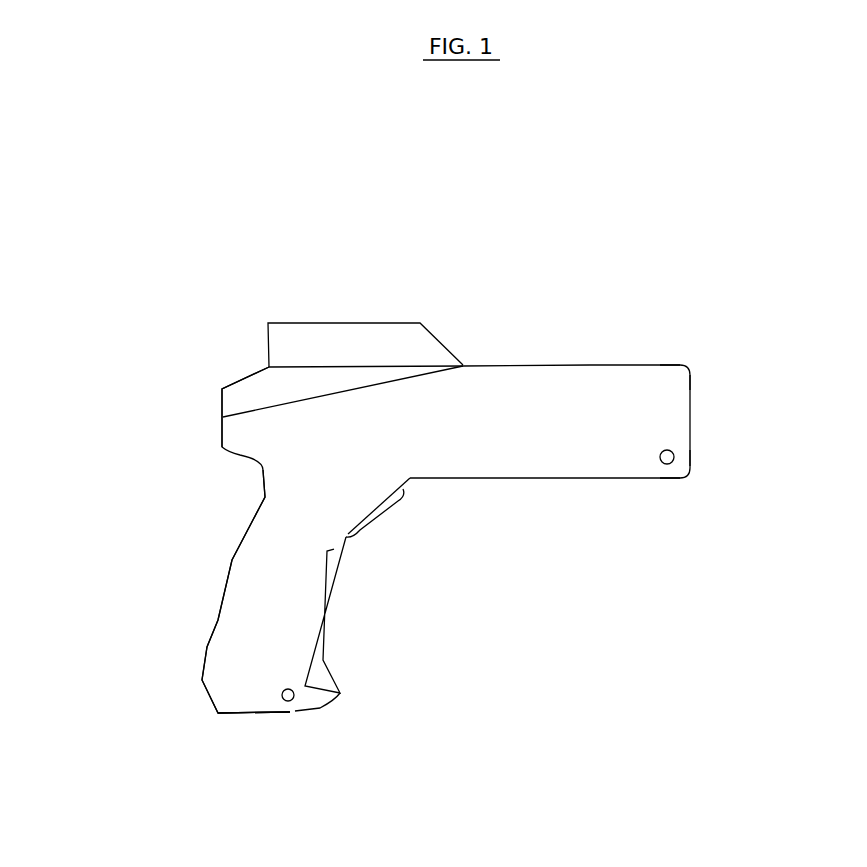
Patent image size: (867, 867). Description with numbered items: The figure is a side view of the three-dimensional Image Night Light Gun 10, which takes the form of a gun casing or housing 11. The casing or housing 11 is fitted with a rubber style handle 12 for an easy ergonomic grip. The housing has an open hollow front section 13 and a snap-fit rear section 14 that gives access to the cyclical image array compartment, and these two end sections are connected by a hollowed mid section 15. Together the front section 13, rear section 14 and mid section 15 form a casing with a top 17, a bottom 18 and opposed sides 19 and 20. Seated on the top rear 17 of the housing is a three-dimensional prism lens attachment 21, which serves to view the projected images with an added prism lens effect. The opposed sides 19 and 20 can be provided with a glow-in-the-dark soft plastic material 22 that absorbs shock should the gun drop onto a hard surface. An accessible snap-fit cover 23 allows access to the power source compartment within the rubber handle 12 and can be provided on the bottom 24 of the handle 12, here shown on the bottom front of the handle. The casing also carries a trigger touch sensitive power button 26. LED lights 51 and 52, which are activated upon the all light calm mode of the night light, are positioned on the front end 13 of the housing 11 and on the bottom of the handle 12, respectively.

The 3-D Image Night Light Gun 10 is at (218, 358).
The gun casing or housing 11 is at (533, 478).
The rubber style handle 12 is at (232, 560).
The open hollow front section 13 is at (690, 400).
The snap-fit rear section 14 is at (222, 415).
The hollowed mid section 15 is at (493, 365).
The top 17 is at (590, 365).
The bottom 18 is at (492, 478).
The side 19 is at (637, 383).
The side 20 is at (686, 478).
The 3D prism lens attachment 21 is at (277, 323).
The glow-in-the-dark soft plastic material 22 is at (612, 478).
The accessible snap-fit cover 23 is at (326, 617).
The bottom of the handle 24 is at (248, 714).
The trigger touch sensitive power button 26 is at (373, 527).
The LED light 51 is at (668, 464).
The LED light 52 is at (290, 701).